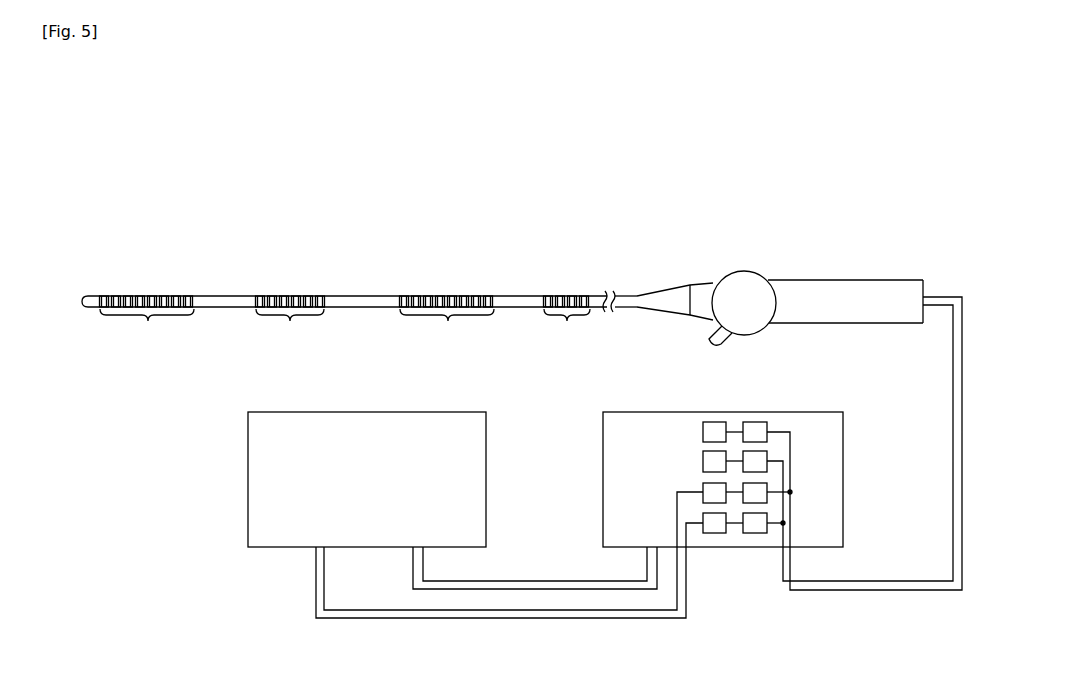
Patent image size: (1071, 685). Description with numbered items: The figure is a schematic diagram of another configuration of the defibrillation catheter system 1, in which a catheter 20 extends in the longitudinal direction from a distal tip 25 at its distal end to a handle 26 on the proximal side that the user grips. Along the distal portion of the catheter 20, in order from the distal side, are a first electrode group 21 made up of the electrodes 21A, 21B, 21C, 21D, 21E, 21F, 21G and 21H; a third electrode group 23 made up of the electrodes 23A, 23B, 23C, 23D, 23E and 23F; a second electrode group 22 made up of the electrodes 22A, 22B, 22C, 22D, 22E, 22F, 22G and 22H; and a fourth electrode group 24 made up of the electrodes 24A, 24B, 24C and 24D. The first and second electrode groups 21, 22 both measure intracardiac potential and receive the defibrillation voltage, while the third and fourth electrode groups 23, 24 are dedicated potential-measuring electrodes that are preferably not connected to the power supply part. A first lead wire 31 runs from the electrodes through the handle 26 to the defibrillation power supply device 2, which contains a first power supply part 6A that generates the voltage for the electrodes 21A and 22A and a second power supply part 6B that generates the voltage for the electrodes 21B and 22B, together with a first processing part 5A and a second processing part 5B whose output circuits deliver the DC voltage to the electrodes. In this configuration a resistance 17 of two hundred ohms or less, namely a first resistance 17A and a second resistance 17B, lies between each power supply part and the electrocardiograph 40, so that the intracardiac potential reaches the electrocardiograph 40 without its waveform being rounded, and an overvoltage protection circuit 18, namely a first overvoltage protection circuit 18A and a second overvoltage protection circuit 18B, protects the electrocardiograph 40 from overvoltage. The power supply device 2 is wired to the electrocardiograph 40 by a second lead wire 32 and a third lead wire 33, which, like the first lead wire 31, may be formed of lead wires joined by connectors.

The defibrillation catheter system 1 is at (110, 133).
The catheter 20 is at (624, 240).
The handle 26 is at (802, 267).
The distal tip 25 is at (86, 304).
The first electrode group 21 is at (149, 285).
The 1-1 electrode 21A is at (104, 296).
The 1-2 electrode 21B is at (116, 296).
The 1-3 electrode 21C is at (128, 296).
The 1-4 electrode 21D is at (140, 296).
The 1-5 electrode 21E is at (152, 296).
The 1-6 electrode 21F is at (164, 296).
The 1-7 electrode 21G is at (176, 296).
The 1-8 electrode 21H is at (188, 296).
The second electrode group 22 is at (449, 285).
The 2-1 electrode 22A is at (404, 296).
The 2-2 electrode 22B is at (416, 296).
The 2-3 electrode 22C is at (428, 296).
The 2-4 electrode 22D is at (440, 296).
The 2-5 electrode 22E is at (452, 296).
The 2-6 electrode 22F is at (464, 296).
The 2-7 electrode 22G is at (476, 296).
The 2-8 electrode 22H is at (488, 296).
The third electrode group 23 is at (288, 271).
The 3-1 electrode 23A is at (260, 296).
The 3-2 electrode 23B is at (272, 296).
The 3-3 electrode 23C is at (284, 296).
The 3-4 electrode 23D is at (296, 296).
The 3-5 electrode 23E is at (308, 296).
The 3-6 electrode 23F is at (320, 296).
The fourth electrode group 24 is at (587, 283).
The 4-1 electrode 24A is at (548, 296).
The 4-2 electrode 24B is at (560, 296).
The 4-3 electrode 24C is at (572, 296).
The 4-4 electrode 24D is at (588, 295).
The electrocardiograph 40 is at (417, 430).
The second lead wire 32 is at (316, 578).
The third lead wire 33 is at (530, 590).
The first lead wire 31 is at (960, 370).
The defibrillation power supply device 2 is at (820, 430).
The first processing part 5A is at (753, 422).
The second processing part 5B is at (769, 456).
The first power supply part 6A is at (707, 422).
The second power supply part 6B is at (703, 457).
The resistance 17 is at (700, 480).
The first resistance 17A is at (703, 489).
The second resistance 17B is at (715, 535).
The overvoltage protection circuit 18 is at (790, 497).
The first overvoltage protection circuit 18A is at (767, 498).
The second overvoltage protection circuit 18B is at (757, 535).